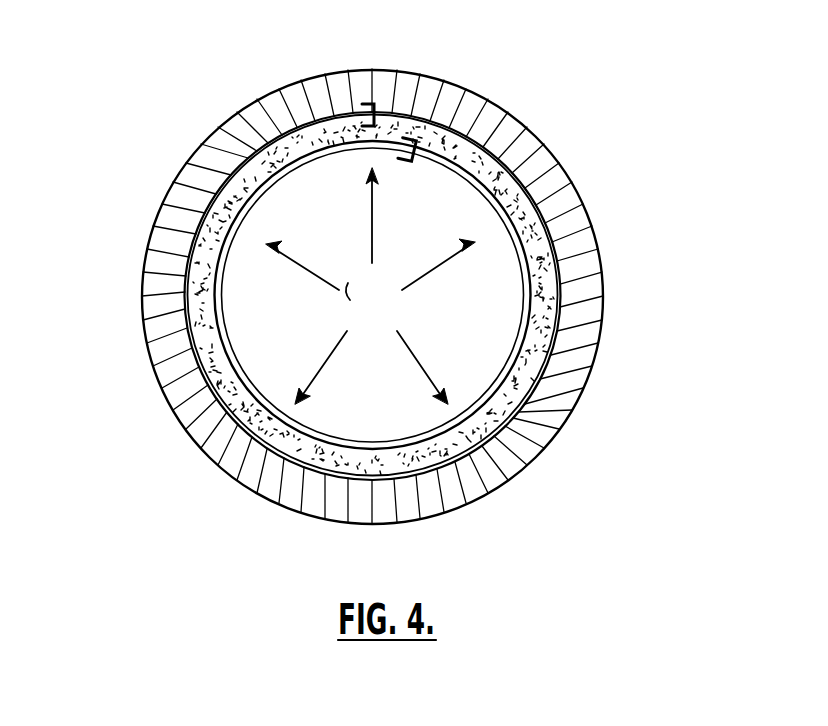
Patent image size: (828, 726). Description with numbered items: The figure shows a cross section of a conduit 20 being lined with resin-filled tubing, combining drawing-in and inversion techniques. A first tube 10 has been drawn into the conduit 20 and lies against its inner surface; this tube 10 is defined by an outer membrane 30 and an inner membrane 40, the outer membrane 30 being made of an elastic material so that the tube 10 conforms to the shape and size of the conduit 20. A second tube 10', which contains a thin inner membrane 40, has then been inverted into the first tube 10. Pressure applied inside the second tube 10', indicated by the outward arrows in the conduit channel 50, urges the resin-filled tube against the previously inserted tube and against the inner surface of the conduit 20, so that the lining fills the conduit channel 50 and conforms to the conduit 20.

The tube 10 is at (407, 76).
The second tube 10' is at (449, 108).
The conduit 20 is at (576, 272).
The outer membrane 30 is at (235, 225).
The inner membrane 40 is at (233, 398).
The conduit channel 50 is at (370, 297).